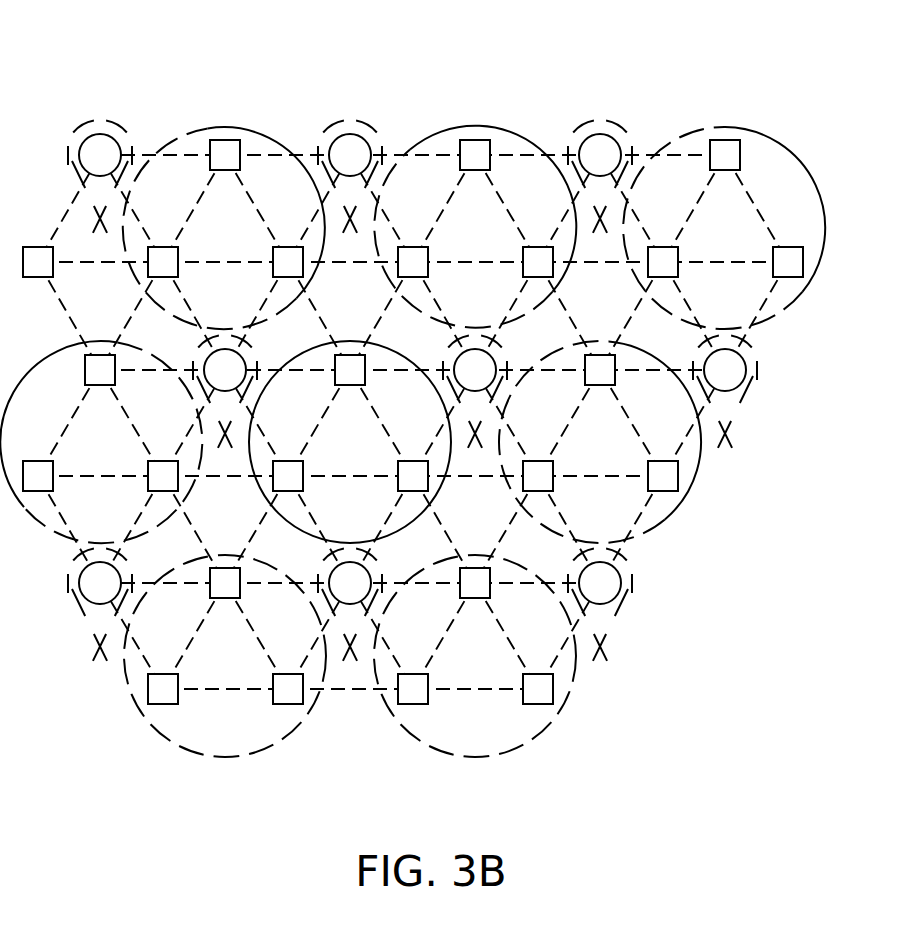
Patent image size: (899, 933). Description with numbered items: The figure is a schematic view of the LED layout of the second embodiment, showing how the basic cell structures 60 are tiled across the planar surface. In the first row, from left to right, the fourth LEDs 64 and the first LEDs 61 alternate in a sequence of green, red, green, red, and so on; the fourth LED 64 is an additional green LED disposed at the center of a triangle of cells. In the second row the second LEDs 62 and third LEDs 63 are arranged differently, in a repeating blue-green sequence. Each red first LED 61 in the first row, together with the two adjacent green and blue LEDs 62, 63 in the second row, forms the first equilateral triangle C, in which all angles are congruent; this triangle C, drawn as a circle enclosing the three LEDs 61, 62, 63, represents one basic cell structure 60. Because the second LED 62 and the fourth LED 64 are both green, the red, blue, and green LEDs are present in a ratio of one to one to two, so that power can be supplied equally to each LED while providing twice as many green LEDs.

The basic cell structure 60 is at (199, 130).
The first light emitting diode 61 is at (226, 140).
The second light emitting diode 62 is at (163, 246).
The third light emitting diode 63 is at (290, 246).
The fourth light emitting diode 64 is at (100, 134).
The first equilateral triangle C is at (765, 217).